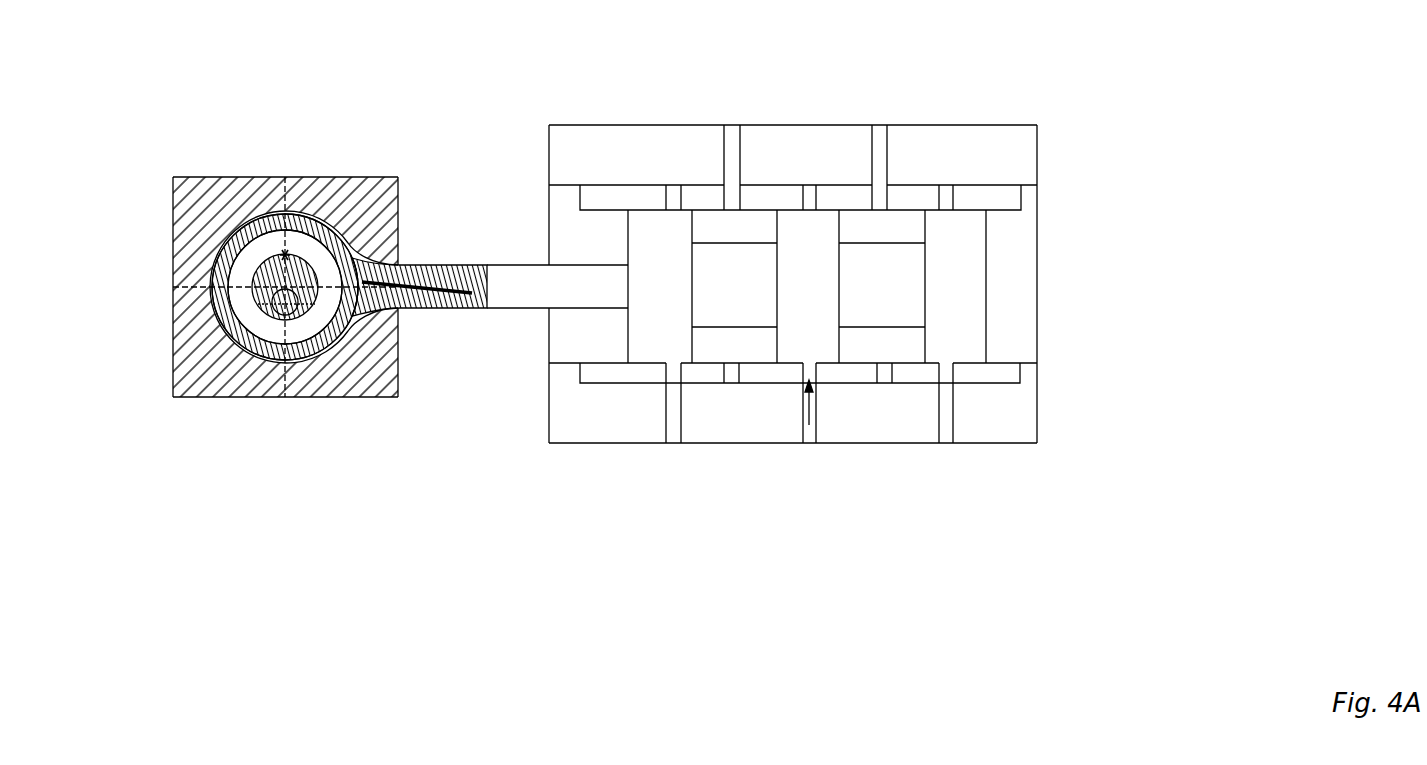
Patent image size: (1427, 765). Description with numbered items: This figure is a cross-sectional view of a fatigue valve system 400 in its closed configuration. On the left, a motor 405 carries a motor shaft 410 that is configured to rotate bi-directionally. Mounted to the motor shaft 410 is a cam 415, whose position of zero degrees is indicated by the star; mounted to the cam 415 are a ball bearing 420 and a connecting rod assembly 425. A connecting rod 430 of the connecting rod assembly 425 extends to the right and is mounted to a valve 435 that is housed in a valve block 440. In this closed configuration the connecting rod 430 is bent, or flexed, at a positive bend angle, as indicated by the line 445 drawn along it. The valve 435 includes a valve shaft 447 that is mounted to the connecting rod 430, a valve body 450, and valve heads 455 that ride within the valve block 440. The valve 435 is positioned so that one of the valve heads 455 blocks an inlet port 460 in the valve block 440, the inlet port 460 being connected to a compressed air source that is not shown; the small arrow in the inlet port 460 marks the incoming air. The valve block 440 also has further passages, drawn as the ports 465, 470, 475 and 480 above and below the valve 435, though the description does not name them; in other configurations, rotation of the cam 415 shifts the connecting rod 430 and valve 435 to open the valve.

The fatigue valve system 400 is at (421, 49).
The motor 405 is at (220, 176).
The motor shaft 410 is at (265, 318).
The cam 415 is at (283, 251).
The ball bearing 420 is at (237, 275).
The connecting rod assembly 425 is at (330, 212).
The connecting rod 430 is at (443, 309).
The valve 435 is at (617, 318).
The valve block 440 is at (1037, 277).
The line 445 is at (433, 264).
The valve shaft 447 is at (537, 283).
The valve body 450 is at (860, 243).
The valve heads 455 is at (650, 223).
The inlet port 460 is at (807, 437).
The upper port 465 is at (882, 133).
The upper port 470 is at (732, 133).
The lower port 475 is at (672, 435).
The lower port 480 is at (945, 433).